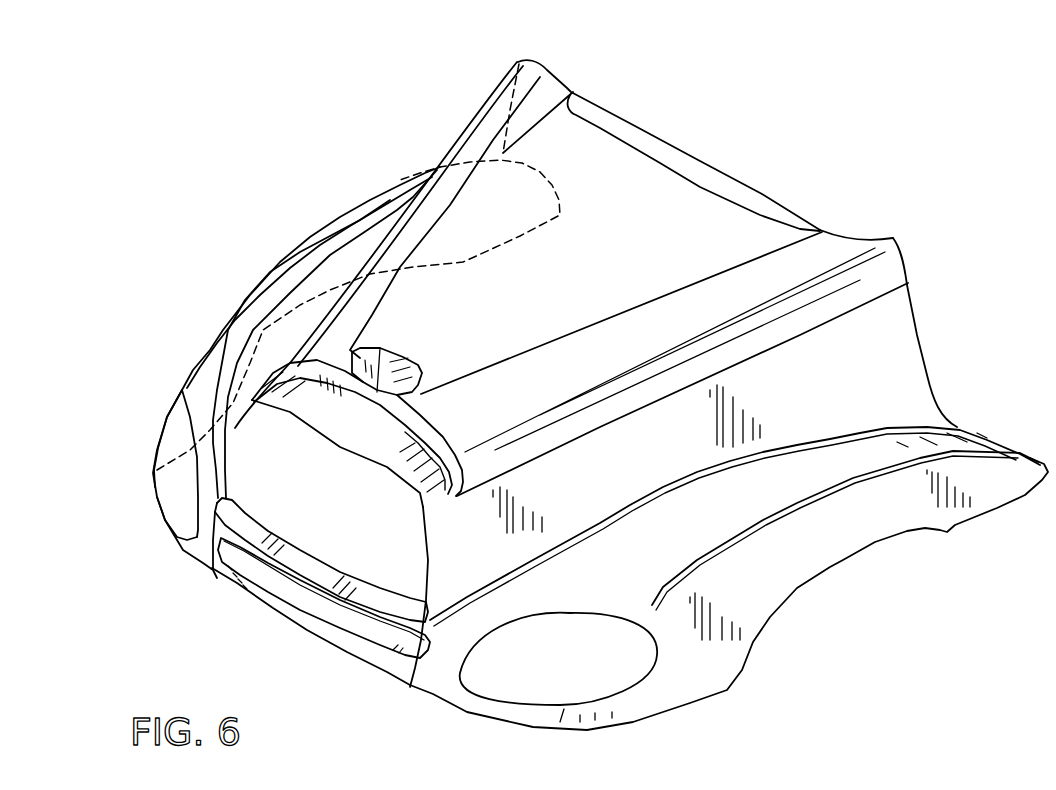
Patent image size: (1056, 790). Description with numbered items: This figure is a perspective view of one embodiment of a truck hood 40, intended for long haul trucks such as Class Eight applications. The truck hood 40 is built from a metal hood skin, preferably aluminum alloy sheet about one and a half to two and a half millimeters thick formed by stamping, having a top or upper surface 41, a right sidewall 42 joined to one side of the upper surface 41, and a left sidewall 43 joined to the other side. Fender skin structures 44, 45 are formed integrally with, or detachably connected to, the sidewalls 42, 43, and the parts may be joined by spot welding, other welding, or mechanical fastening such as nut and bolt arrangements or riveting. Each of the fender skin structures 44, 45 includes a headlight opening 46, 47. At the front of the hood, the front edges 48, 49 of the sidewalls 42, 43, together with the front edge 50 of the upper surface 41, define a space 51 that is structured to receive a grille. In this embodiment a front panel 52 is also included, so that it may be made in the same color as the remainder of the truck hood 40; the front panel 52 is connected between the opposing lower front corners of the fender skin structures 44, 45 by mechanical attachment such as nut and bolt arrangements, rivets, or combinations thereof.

The truck hood 40 is at (283, 172).
The upper surface 41 is at (553, 297).
The right sidewall 42 is at (447, 107).
The left sidewall 43 is at (853, 384).
The fender skin structure 44 is at (840, 557).
The fender skin structure 45 is at (257, 267).
The headlight opening 46 is at (563, 681).
The headlight opening 47 is at (198, 502).
The front edge of sidewall 48 is at (423, 582).
The front edge of sidewall 49 is at (228, 450).
The front edge of top surface 50 is at (353, 453).
The space 51 is at (363, 529).
The front panel 52 is at (310, 633).